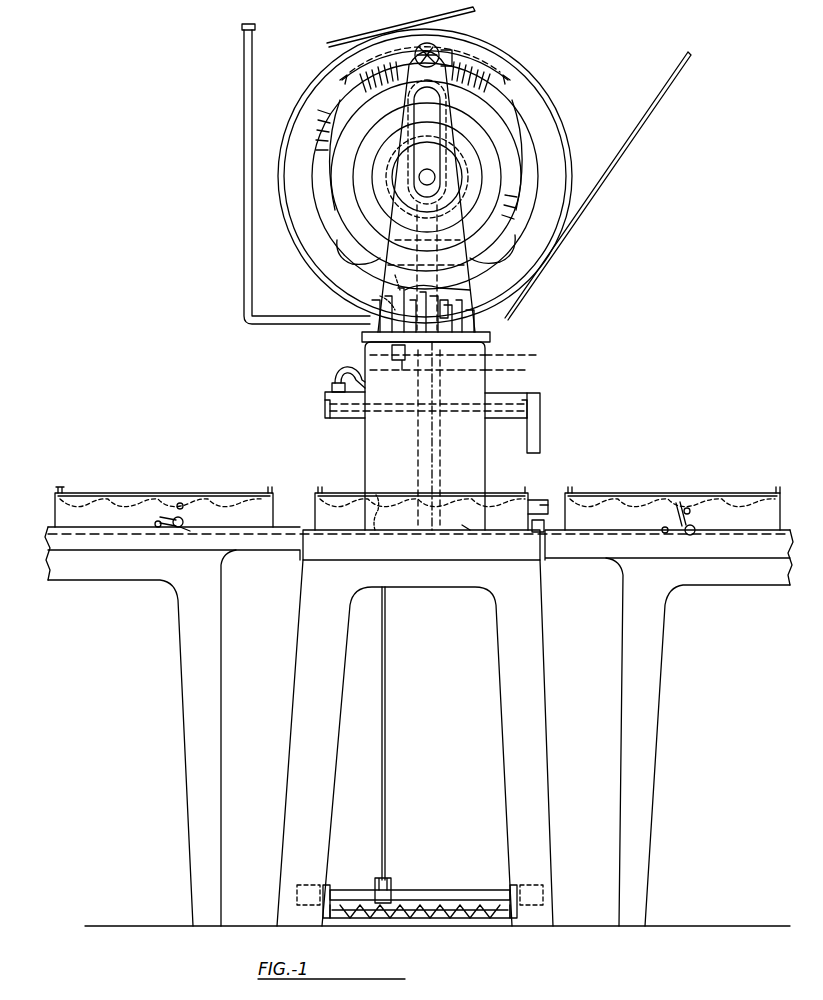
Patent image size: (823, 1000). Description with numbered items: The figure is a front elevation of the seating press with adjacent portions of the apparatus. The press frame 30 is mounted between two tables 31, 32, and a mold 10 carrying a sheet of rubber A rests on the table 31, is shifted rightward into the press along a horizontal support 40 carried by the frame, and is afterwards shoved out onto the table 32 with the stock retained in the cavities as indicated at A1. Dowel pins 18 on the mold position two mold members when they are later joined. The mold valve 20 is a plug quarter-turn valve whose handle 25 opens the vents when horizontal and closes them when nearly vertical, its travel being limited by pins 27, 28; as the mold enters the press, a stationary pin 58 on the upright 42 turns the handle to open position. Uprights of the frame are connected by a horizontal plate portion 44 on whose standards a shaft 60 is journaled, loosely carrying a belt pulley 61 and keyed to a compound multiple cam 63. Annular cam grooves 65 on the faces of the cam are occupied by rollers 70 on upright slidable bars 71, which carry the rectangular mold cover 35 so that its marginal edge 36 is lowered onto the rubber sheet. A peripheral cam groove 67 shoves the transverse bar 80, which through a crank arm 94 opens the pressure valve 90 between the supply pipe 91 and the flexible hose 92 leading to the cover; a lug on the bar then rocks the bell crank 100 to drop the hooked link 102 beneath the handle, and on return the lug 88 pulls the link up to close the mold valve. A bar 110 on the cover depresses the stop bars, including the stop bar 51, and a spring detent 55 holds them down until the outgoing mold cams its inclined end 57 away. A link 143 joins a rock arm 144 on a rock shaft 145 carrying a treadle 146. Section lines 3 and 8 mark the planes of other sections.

The section line 8— 8 is at (427, 43).
The section line 3— 3 is at (360, 320).
The mold 10 is at (417, 509).
The dowel pins 18 is at (318, 488).
The mold valve 20 is at (182, 529).
The handle 25 is at (166, 510).
The pin 27 is at (158, 527).
The pin 28 is at (182, 503).
The press frame 30 is at (452, 584).
The table 31 is at (172, 726).
The table 32 is at (669, 728).
The mold cover 35 is at (325, 404).
The marginal edge 36 is at (328, 420).
The horizontal support 40 is at (503, 542).
The upright 42 is at (425, 436).
The horizontal plate portion 44 is at (527, 354).
The stop bar 51 is at (545, 527).
The spring detent 55 is at (538, 499).
The inclined end 57 is at (546, 499).
The stationary pin 58 is at (376, 526).
The shaft 60 is at (432, 175).
The belt pulley 61 is at (425, 176).
The compound multiple cam 63 is at (510, 137).
The annular cam grooves 65 is at (365, 95).
The cam groove 67 is at (495, 75).
The rollers 70 is at (408, 55).
The slidable bars 71 is at (445, 118).
The transverse bar 80 is at (420, 346).
The lug 88 is at (472, 288).
The pressure valve 90 is at (380, 294).
The supply pipe 91 is at (312, 316).
The flexible hose 92 is at (335, 372).
The crank arm 94 is at (395, 275).
The bell crank 100 is at (450, 303).
The hooked link 102 is at (519, 371).
The bar 110 is at (540, 432).
The link 143 is at (387, 745).
The rock arm 144 is at (374, 885).
The rock shaft 145 is at (423, 885).
The treadle 146 is at (466, 908).
The sheet of rubber A is at (108, 496).
The seated rubber A1 is at (612, 495).